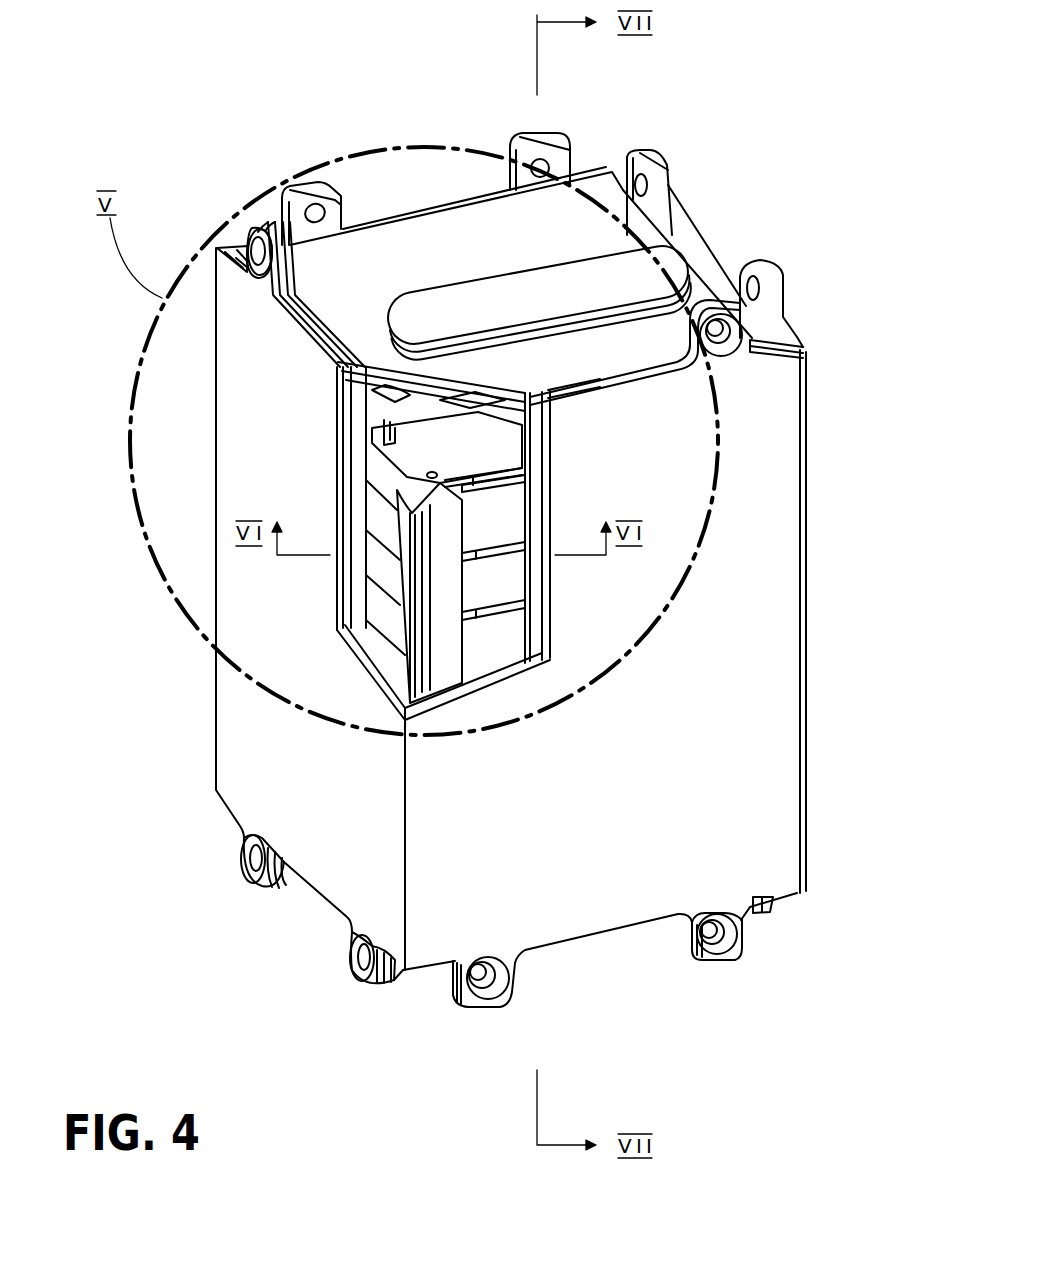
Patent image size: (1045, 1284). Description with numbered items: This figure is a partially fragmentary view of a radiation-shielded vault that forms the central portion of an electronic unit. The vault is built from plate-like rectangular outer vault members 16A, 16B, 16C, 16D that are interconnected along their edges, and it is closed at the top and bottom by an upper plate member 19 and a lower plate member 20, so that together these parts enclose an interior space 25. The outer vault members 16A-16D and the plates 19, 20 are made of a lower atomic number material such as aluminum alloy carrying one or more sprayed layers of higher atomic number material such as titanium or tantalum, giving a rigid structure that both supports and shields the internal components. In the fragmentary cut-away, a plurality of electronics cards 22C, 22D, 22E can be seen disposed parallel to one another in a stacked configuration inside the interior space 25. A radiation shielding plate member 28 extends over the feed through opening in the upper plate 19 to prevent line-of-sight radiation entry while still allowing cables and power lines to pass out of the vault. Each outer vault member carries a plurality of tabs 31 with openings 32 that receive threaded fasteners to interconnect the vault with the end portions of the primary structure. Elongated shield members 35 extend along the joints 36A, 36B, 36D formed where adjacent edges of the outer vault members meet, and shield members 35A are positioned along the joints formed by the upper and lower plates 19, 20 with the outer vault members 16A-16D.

The outer vault member 16A is at (337, 855).
The outer vault member 16B is at (610, 855).
The outer vault member 16C is at (725, 250).
The outer vault member 16D is at (405, 200).
The upper plate member 19 is at (470, 250).
The lower plate member 20 is at (612, 946).
The electronics card 22C is at (493, 592).
The electronics card 22D is at (493, 530).
The electronics card 22E is at (477, 464).
The interior space 25 is at (368, 455).
The radiation shielding plate member 28 is at (632, 280).
The tab 31 is at (268, 237).
The opening 32 is at (245, 248).
The elongated shield member 35 is at (420, 628).
The shield member 35A is at (380, 405).
The joint 36A is at (405, 935).
The joint 36B is at (810, 665).
The joint 36D is at (215, 600).